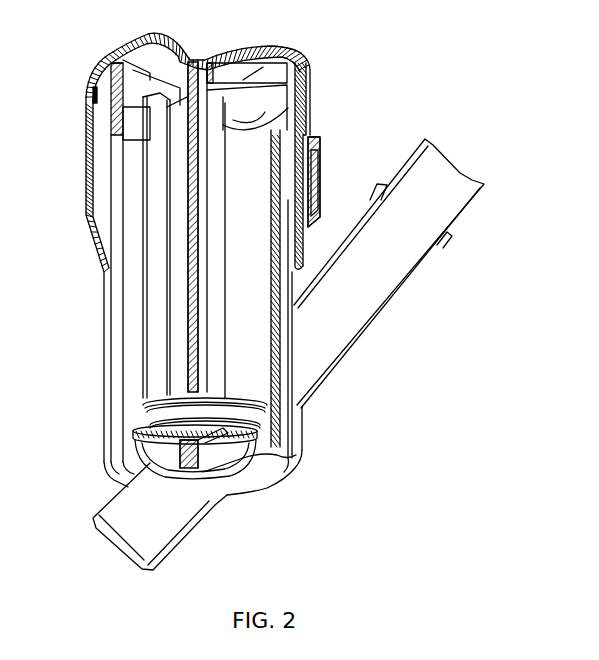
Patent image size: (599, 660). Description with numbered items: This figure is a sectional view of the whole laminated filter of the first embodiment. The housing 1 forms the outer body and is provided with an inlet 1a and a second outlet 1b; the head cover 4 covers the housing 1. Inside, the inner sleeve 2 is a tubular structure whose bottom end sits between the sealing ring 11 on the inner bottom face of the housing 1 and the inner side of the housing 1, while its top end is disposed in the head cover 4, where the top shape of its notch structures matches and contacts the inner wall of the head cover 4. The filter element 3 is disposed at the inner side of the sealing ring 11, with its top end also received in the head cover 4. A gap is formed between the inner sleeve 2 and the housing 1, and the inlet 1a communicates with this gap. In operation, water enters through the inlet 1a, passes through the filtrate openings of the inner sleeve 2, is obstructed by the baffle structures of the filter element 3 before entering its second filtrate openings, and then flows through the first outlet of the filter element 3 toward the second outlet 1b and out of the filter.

The housing 1 is at (120, 340).
The inlet 1a is at (350, 295).
The second outlet 1b is at (167, 507).
The sealing ring 11 is at (296, 456).
The inner sleeve 2 is at (320, 175).
The filter element 3 is at (205, 175).
The head cover 4 is at (312, 92).